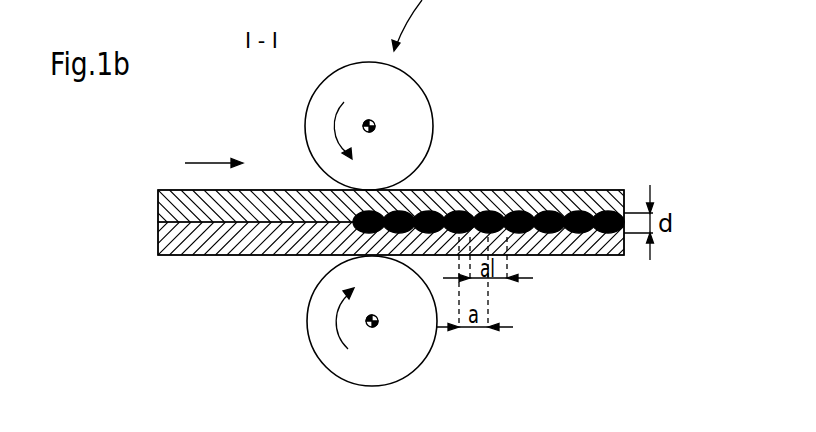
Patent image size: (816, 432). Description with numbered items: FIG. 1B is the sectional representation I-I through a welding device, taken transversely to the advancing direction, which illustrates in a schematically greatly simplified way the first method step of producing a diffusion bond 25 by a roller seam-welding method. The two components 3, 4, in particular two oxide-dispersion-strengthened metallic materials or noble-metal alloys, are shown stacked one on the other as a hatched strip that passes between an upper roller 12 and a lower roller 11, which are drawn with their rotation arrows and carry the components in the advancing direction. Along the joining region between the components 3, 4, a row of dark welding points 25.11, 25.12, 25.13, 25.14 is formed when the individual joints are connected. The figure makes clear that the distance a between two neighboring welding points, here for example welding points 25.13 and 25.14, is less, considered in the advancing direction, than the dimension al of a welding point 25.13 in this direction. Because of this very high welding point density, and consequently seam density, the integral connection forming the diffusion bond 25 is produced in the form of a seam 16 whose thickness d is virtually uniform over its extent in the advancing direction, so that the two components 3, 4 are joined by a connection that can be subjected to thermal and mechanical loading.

The component 3 is at (167, 206).
The component 4 is at (180, 242).
The lower roller 11 is at (423, 348).
The upper roller 12 is at (405, 90).
The seam 16 is at (618, 190).
The diffusion bond 25 is at (498, 137).
The welding point 25.11 is at (428, 212).
The welding point 25.12 is at (462, 212).
The welding point 25.13 is at (500, 212).
The welding point 25.14 is at (540, 212).